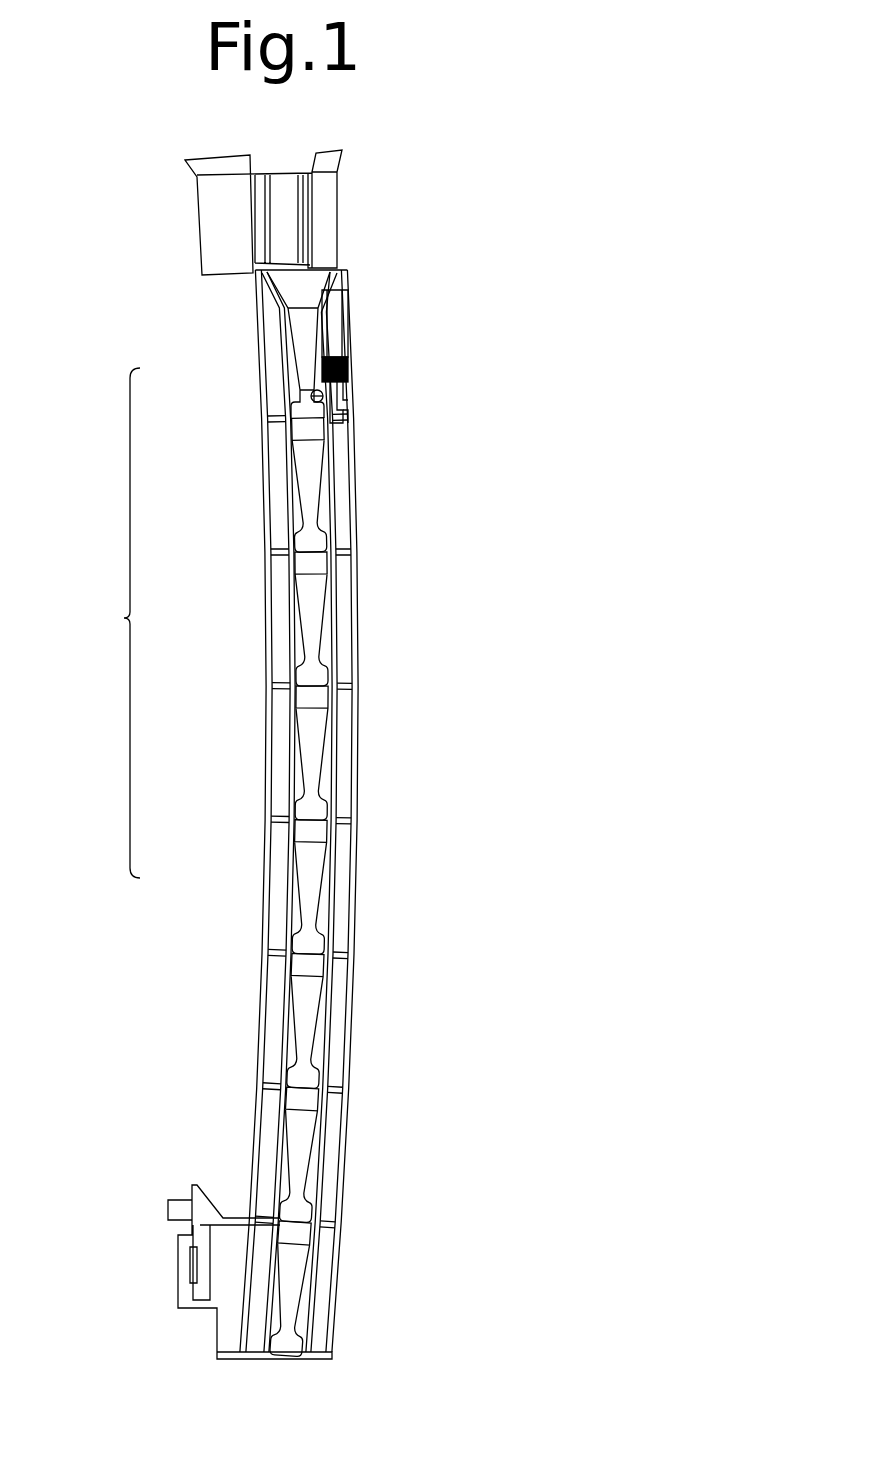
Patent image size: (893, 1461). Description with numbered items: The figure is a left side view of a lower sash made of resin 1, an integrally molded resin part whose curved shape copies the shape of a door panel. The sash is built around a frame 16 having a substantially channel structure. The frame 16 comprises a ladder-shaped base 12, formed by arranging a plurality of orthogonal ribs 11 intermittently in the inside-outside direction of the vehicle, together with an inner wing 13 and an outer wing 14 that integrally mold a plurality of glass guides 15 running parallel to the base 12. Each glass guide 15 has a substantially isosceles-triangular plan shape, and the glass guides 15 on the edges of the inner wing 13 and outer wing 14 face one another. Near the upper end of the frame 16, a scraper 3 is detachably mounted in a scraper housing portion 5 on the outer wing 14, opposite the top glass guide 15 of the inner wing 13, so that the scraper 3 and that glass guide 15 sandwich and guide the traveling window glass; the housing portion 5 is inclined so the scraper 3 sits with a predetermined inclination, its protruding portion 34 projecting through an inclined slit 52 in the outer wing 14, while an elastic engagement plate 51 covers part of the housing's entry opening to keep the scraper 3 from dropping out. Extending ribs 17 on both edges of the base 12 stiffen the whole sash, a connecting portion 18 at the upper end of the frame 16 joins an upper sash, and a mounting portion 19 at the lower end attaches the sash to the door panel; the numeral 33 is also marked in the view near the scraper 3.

The lower sash made of resin 1 is at (372, 757).
The scraper 3 is at (352, 408).
The scraper housing portion 5 is at (362, 396).
The orthogonal rib 11 is at (310, 828).
The base 12 is at (280, 853).
The inner wing 13 is at (273, 566).
The outer wing 14 is at (332, 565).
The glass guide 15 is at (295, 400).
The frame 16 is at (115, 623).
The extending rib 17 is at (265, 1022).
The connecting portion 18 is at (215, 228).
The mounting portion 19 is at (187, 1273).
The head portion 33 is at (313, 402).
The protruding portion 34 is at (320, 394).
The elastic engagement plate 51 is at (335, 372).
The slit 52 is at (350, 380).